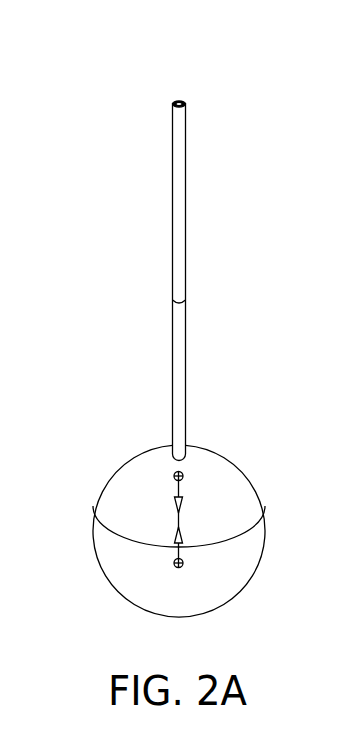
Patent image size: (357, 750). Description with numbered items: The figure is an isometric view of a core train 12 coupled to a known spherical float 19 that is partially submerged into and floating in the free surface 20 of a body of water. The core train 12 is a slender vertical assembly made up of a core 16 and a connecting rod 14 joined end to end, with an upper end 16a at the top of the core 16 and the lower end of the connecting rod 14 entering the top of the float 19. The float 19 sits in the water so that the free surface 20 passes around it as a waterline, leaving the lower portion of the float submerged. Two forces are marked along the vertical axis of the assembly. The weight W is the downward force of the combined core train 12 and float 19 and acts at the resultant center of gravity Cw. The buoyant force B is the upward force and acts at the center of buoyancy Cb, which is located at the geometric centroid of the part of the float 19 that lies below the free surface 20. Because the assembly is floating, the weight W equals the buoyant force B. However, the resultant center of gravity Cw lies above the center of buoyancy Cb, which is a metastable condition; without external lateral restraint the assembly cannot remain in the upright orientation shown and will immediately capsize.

The core train 12 is at (71, 386).
The upper end of stem 16a is at (172, 103).
The core 16 is at (177, 209).
The connecting rod 14 is at (176, 380).
The spherical float 19 is at (122, 459).
The free surface 20 is at (96, 506).
The resultant center of gravity Cw is at (160, 475).
The weight W is at (166, 503).
The buoyant force B is at (170, 533).
The center of buoyancy Cb is at (161, 561).